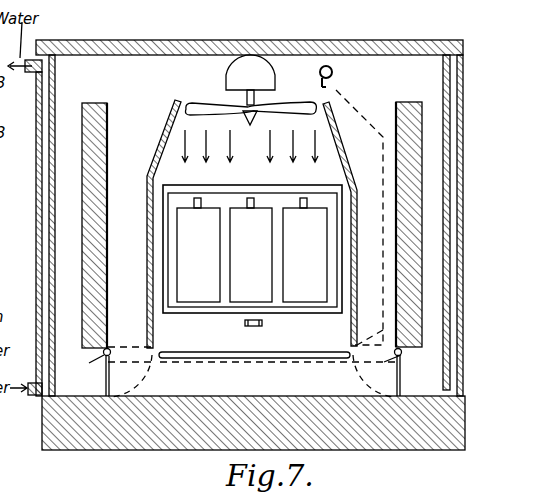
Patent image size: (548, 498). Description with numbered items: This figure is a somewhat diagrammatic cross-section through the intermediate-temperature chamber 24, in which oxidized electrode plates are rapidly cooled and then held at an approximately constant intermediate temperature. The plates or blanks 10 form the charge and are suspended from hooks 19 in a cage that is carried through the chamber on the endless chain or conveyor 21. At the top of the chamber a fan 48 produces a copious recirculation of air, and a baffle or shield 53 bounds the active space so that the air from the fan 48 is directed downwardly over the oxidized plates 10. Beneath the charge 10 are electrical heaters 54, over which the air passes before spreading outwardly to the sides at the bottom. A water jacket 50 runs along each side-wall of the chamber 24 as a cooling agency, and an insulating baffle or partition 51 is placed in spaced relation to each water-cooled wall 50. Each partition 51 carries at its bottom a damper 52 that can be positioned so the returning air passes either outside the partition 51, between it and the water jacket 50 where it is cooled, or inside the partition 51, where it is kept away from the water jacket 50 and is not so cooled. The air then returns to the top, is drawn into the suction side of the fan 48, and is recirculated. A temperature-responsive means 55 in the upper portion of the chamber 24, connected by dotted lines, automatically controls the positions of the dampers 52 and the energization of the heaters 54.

The intermediate-temperature chamber 24 is at (129, 40).
The water jacket 50 is at (42, 201).
The baffle or partition 51 is at (97, 103).
The baffle or shield 53 is at (164, 139).
The temperature-responsive means 55 is at (344, 68).
The fan 48 is at (218, 103).
The plates or blanks 10 is at (208, 265).
The hooks 19 is at (247, 200).
The endless chain or conveyor 21 is at (263, 323).
The electrical heaters 54 is at (317, 352).
The damper 52 is at (105, 379).